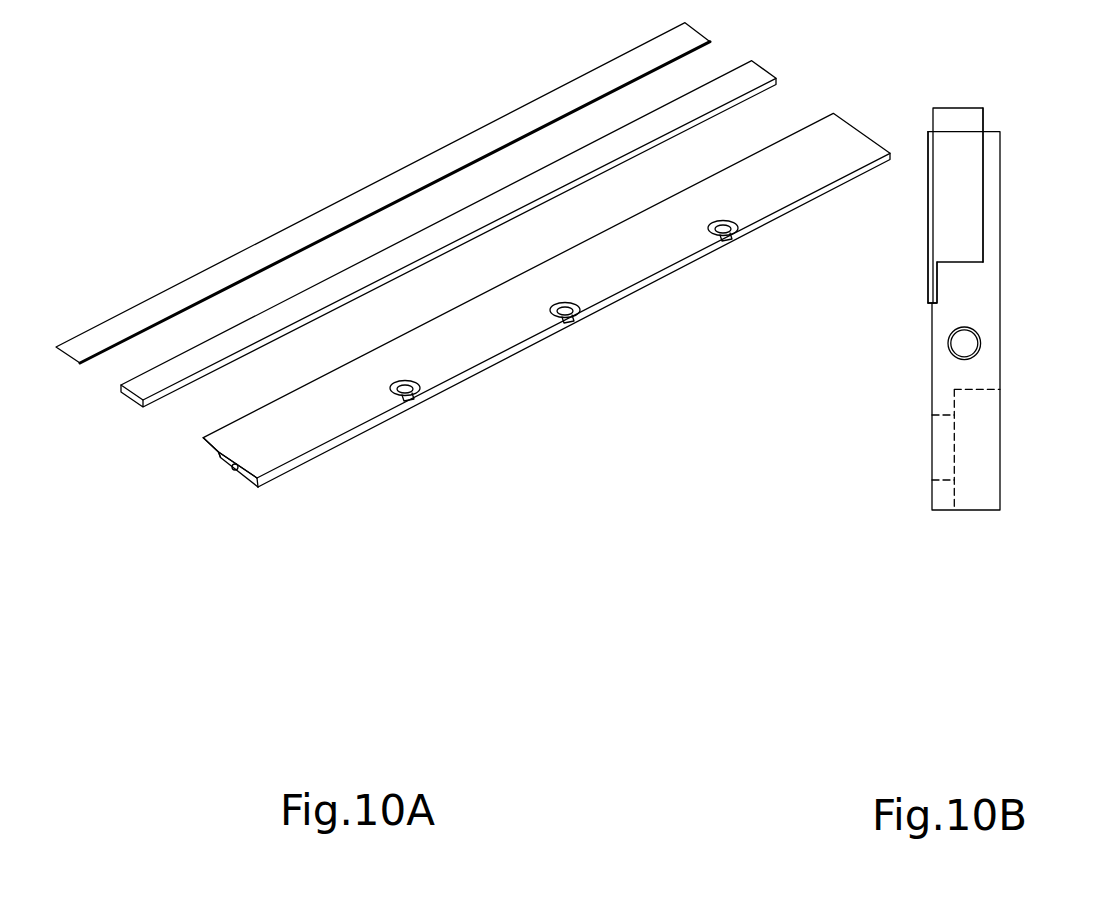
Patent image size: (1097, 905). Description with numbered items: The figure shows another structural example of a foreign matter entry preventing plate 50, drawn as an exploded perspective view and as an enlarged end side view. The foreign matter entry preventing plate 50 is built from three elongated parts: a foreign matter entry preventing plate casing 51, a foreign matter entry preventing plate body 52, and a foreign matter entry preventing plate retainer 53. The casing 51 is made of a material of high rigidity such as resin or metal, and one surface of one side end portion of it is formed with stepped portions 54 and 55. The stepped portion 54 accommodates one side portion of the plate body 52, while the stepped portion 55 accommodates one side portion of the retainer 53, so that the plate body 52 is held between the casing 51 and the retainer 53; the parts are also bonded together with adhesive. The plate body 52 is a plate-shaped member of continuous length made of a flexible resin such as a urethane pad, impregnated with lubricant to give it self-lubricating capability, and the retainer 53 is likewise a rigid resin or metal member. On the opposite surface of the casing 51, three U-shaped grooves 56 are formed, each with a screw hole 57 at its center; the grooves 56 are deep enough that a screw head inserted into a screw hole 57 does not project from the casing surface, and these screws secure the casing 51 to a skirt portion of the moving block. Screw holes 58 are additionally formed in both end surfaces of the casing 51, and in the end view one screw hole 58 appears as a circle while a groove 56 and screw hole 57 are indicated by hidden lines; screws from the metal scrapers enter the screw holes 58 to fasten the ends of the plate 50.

In FIG. 10A, the foreign matter entry preventing plate 50 is at (389, 151).
In FIG. 10B, the foreign matter entry preventing plate 50 is at (922, 347).
In FIG. 10A, the foreign matter entry preventing plate casing 51 is at (513, 351).
In FIG. 10B, the foreign matter entry preventing plate casing 51 is at (953, 321).
In FIG. 10A, the foreign matter entry preventing plate body 52 is at (465, 227).
In FIG. 10B, the foreign matter entry preventing plate body 52 is at (968, 177).
In FIG. 10A, the foreign matter entry preventing plate retainer 53 is at (430, 163).
In FIG. 10B, the foreign matter entry preventing plate retainer 53 is at (927, 203).
In FIG. 10A, the stepped portion 54 is at (213, 446).
In FIG. 10B, the stepped portion 54 is at (978, 223).
In FIG. 10A, the stepped portion 55 is at (218, 457).
In FIG. 10B, the stepped portion 55 is at (931, 287).
In FIG. 10A, the U-shaped groove 56 is at (420, 396).
In FIG. 10B, the U-shaped groove 56 is at (957, 405).
In FIG. 10A, the screw hole 57 is at (408, 401).
In FIG. 10B, the screw hole 57 is at (941, 452).
In FIG. 10A, the screw hole 58 is at (236, 473).
In FIG. 10B, the screw hole 58 is at (972, 342).